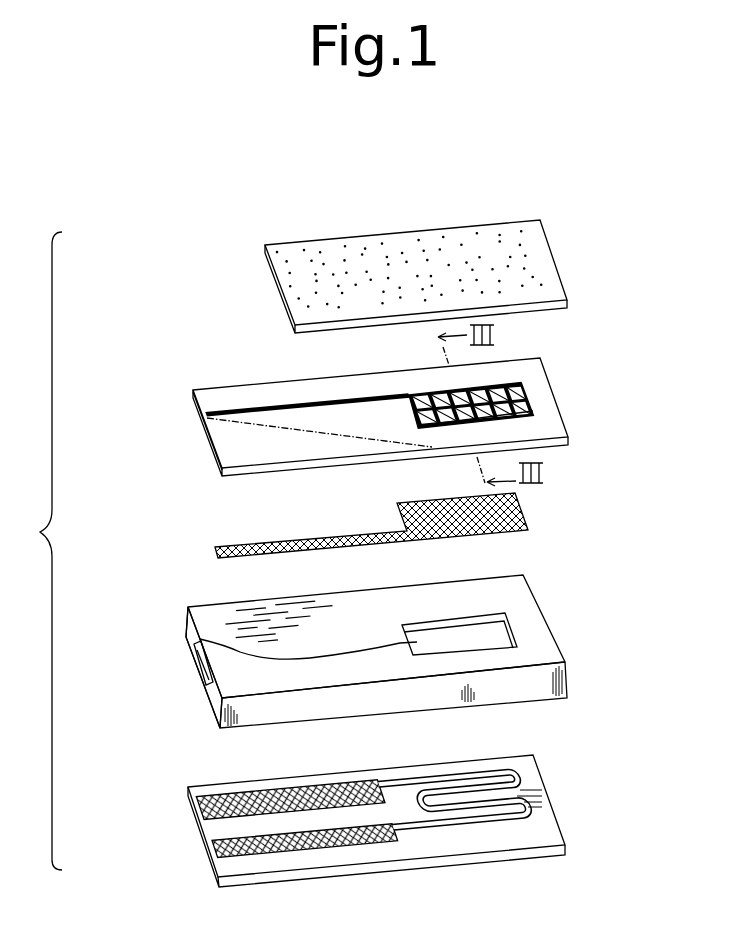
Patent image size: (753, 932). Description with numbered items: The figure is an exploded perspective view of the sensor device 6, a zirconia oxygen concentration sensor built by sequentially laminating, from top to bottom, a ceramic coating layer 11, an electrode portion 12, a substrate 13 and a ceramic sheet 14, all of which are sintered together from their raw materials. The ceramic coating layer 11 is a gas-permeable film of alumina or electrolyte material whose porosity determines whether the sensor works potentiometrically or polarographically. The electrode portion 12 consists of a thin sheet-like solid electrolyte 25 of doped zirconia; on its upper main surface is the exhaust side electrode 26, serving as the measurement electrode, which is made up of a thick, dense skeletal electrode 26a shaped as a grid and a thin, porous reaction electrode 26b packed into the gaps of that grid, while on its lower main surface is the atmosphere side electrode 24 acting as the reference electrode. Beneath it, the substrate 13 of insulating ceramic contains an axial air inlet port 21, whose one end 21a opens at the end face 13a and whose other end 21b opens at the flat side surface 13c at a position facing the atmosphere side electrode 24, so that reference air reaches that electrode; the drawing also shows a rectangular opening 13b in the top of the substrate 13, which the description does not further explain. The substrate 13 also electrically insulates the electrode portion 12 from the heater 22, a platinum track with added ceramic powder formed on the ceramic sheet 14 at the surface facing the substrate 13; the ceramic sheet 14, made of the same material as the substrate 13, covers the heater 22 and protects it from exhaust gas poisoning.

The sensor device 6 is at (32, 551).
The ceramic coating layer 11 is at (552, 252).
The electrode portion 12 is at (319, 264).
The substrate 13 is at (344, 650).
The end face 13a is at (213, 700).
The window opening 13b is at (435, 627).
The flat side surface 13c is at (363, 668).
The ceramic sheet 14 is at (403, 821).
The air inlet port 21 is at (242, 662).
The one end of air inlet port 21a is at (193, 663).
The other end of air inlet port 21b is at (200, 639).
The heater 22 is at (530, 836).
The atmosphere side electrode 24 is at (400, 508).
The solid electrolyte 25 is at (212, 436).
The exhaust side electrode 26 is at (267, 232).
The skeletal electrode 26a is at (0, 0).
The reaction electrode 26b is at (533, 411).